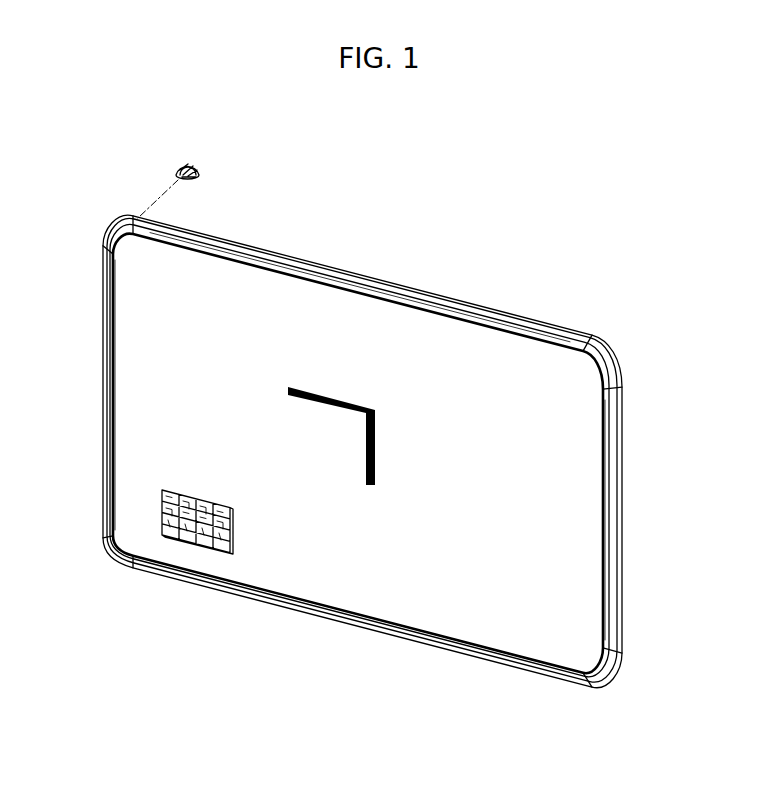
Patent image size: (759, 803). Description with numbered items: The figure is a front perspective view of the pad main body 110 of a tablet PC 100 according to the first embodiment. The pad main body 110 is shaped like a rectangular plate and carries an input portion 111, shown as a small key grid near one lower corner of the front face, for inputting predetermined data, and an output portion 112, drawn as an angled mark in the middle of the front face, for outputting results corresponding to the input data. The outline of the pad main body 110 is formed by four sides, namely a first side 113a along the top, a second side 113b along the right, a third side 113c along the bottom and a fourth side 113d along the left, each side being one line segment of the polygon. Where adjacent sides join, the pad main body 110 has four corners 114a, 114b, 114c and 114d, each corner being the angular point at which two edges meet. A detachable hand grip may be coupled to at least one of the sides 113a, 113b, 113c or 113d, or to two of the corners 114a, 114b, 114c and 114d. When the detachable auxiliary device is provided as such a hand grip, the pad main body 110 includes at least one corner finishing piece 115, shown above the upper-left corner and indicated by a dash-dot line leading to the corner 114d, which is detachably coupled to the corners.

The tablet PC 100 is at (677, 158).
The pad main body 110 is at (559, 311).
The input portion 111 is at (193, 544).
The output portion 112 is at (333, 395).
The side 113a is at (455, 297).
The side 113b is at (612, 503).
The side 113c is at (343, 618).
The side 113d is at (108, 397).
The corner 114a is at (612, 357).
The corner 114b is at (602, 686).
The corner 114c is at (113, 551).
The corner 114d is at (123, 226).
The corner finishing piece 115 is at (189, 163).